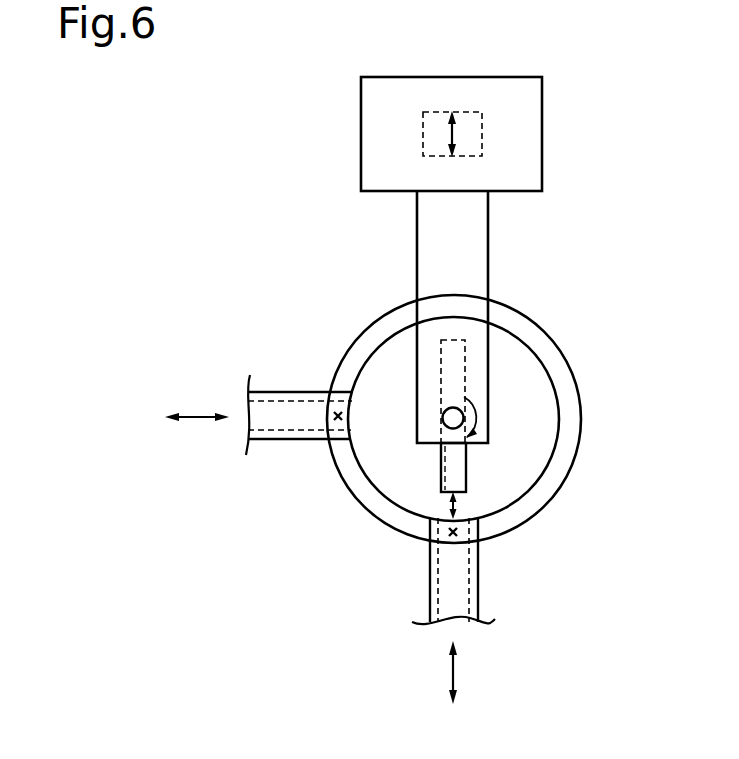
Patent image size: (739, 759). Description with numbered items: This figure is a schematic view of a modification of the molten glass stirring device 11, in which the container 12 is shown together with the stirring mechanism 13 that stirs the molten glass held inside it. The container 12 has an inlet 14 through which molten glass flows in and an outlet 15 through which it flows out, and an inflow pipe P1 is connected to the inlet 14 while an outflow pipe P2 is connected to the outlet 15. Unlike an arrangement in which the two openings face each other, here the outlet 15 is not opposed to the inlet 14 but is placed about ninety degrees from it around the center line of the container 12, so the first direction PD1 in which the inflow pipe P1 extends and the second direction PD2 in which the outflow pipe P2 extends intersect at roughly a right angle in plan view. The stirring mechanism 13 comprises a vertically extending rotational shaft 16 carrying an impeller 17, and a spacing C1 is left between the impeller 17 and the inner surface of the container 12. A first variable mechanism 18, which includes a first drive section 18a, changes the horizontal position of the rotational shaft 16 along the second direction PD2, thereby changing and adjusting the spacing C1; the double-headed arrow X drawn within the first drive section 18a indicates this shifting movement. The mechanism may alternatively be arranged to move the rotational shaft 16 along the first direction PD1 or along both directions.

The molten glass stirring device 11 is at (343, 122).
The container 12 is at (363, 309).
The stirring mechanism 13 is at (497, 217).
The inlet 14 is at (333, 412).
The outlet 15 is at (448, 546).
The rotational shaft 16 is at (443, 410).
The impeller 17 is at (467, 472).
The first variable mechanism 18 is at (542, 77).
The first drive section 18a is at (482, 112).
The movement direction X is at (449, 132).
The inflow pipe P1 is at (266, 392).
The outflow pipe P2 is at (478, 578).
The first direction PD1 is at (199, 415).
The second direction PD2 is at (456, 672).
The spacing C1 is at (457, 505).